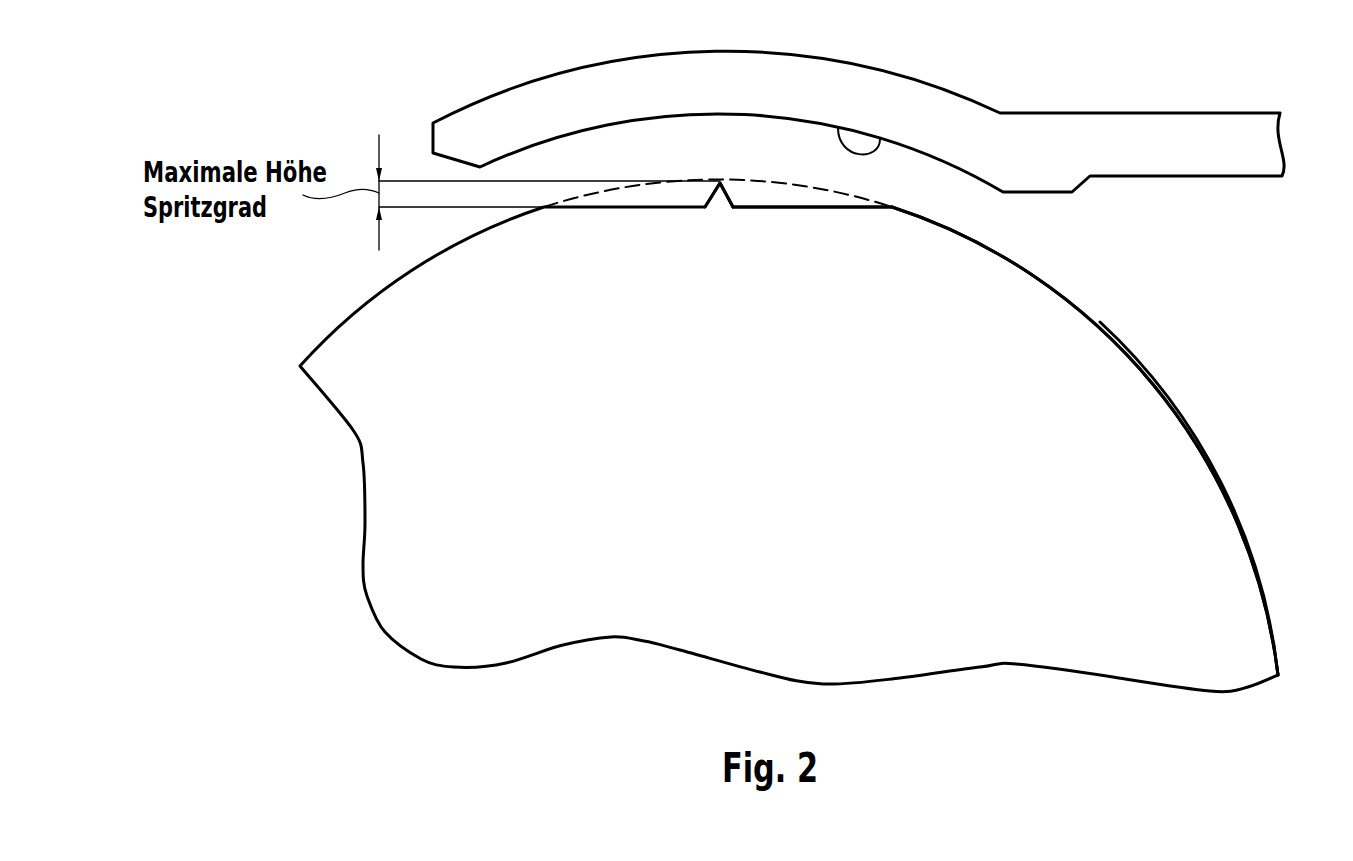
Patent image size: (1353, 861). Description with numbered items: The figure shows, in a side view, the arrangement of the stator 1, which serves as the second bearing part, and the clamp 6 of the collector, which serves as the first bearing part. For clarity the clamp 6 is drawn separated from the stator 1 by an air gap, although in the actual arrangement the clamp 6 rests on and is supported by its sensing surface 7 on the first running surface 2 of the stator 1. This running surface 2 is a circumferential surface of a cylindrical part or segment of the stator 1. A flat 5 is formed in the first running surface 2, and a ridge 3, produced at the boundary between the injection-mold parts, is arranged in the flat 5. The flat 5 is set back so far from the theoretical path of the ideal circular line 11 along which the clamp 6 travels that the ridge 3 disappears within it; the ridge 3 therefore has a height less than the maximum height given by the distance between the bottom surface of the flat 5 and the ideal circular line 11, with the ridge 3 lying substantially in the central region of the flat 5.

The stator 1 is at (1186, 553).
The first running surface 2 is at (1112, 322).
The ideal circular line 11 is at (1190, 425).
The ridge 3 is at (720, 200).
The flat 5 is at (776, 205).
The clamp 6 is at (1138, 143).
The sensing surface 7 is at (884, 143).